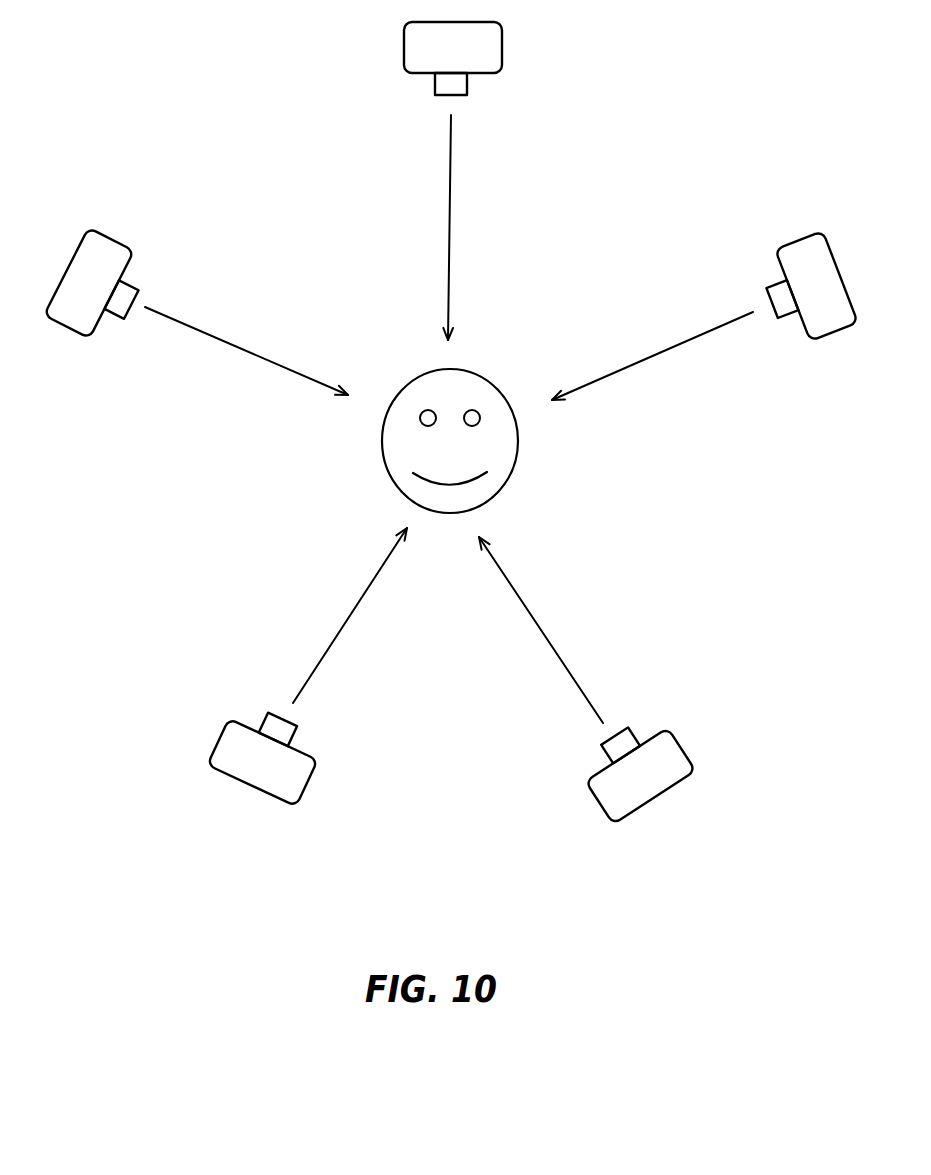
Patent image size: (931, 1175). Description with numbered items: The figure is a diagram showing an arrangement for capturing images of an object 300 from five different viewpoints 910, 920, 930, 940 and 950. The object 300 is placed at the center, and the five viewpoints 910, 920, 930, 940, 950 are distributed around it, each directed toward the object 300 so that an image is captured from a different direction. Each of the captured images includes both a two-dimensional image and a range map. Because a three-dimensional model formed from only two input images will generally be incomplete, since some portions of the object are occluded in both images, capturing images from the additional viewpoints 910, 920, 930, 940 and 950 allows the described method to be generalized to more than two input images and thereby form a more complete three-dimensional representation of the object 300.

The object 300 is at (382, 454).
The viewpoint 910 is at (598, 807).
The viewpoint 920 is at (222, 743).
The viewpoint 930 is at (108, 235).
The viewpoint 940 is at (503, 47).
The viewpoint 950 is at (838, 332).